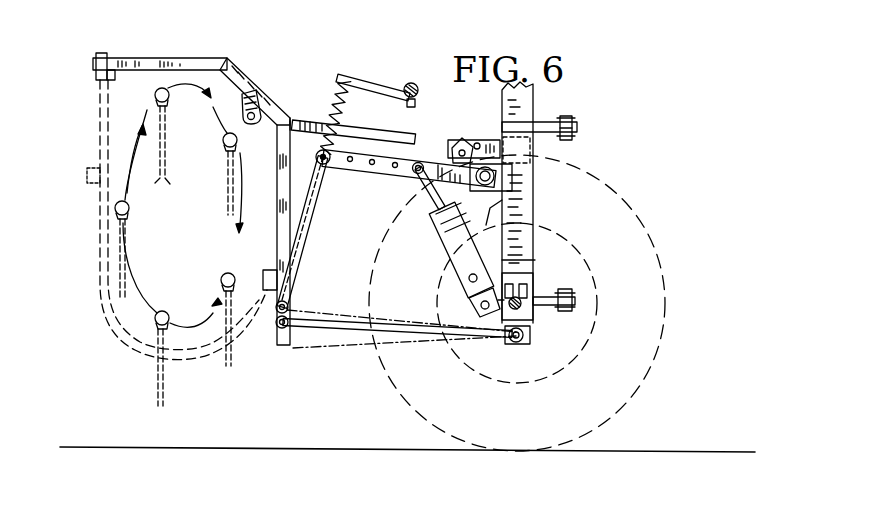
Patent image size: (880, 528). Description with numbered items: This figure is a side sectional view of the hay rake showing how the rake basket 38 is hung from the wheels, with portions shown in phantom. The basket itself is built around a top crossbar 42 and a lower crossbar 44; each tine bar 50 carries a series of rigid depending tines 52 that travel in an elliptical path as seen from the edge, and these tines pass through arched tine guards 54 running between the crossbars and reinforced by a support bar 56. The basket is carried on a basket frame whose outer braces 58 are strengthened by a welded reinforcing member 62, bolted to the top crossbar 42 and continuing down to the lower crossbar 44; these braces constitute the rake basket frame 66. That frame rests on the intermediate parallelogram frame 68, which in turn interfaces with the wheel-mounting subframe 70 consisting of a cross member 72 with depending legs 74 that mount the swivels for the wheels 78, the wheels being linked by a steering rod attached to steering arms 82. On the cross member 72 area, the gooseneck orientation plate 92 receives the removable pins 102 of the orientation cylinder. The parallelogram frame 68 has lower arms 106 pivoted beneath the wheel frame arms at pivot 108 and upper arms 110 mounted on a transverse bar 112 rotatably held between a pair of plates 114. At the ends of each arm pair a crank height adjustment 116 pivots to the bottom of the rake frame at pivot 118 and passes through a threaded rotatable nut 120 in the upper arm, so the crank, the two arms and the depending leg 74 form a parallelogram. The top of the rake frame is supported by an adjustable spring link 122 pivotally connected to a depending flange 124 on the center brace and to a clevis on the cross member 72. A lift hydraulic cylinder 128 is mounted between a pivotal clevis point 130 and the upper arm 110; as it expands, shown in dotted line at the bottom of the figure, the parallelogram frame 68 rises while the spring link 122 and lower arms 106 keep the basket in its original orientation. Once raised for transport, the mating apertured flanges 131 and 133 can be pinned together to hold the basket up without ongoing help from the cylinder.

The rake basket 38 is at (118, 333).
The crossbar 42 is at (95, 76).
The crossbar 44 is at (263, 278).
The tine bar 50 is at (224, 137).
The tines 52 is at (228, 206).
The tine guards 54 is at (135, 348).
The support bar 56 is at (90, 178).
The outer braces 58 is at (157, 57).
The reinforcing member 62 is at (243, 72).
The rake basket frame 66 is at (135, 56).
The parallelogram frame 68 is at (312, 342).
The wheel-mounting subframe 70 is at (545, 257).
The cross member 72 is at (535, 146).
The depending legs 74 is at (533, 233).
The wheels 78 is at (640, 223).
The steering arms 82 is at (527, 298).
The orientation plate 92 is at (533, 137).
The removable pins 102 is at (565, 117).
The lower arms 106 is at (350, 331).
The pivot 108 is at (524, 337).
The upper arms 110 is at (372, 172).
The transverse bar 112 is at (505, 182).
The plates 114 is at (533, 203).
The crank height adjustment 116 is at (368, 80).
The pivot 118 is at (289, 307).
The threaded rotatable nut 120 is at (316, 157).
The adjustable spring link 122 is at (321, 121).
The depending flange 124 is at (238, 100).
The hydraulic cylinder 128 is at (456, 258).
The pivotal clevis point 130 is at (470, 306).
The apertured flange 131 is at (452, 152).
The apertured flange 133 is at (473, 138).